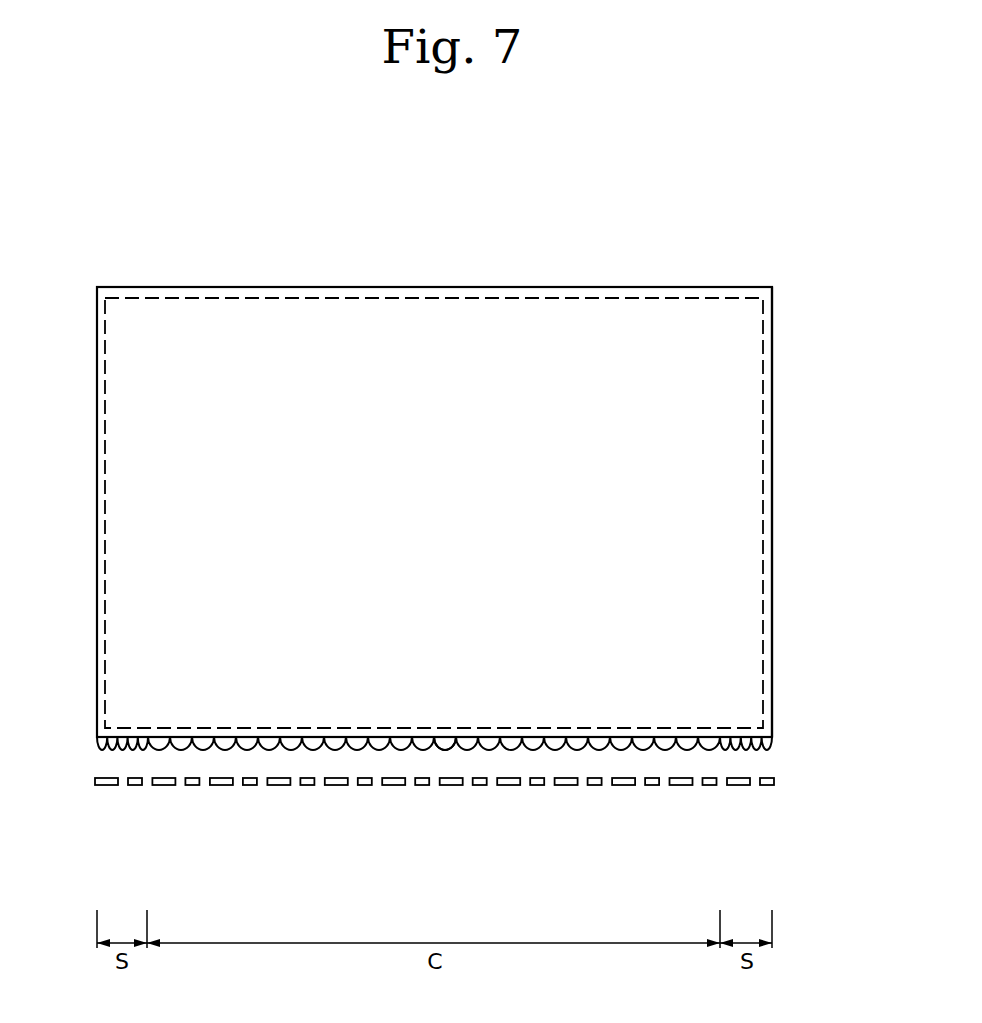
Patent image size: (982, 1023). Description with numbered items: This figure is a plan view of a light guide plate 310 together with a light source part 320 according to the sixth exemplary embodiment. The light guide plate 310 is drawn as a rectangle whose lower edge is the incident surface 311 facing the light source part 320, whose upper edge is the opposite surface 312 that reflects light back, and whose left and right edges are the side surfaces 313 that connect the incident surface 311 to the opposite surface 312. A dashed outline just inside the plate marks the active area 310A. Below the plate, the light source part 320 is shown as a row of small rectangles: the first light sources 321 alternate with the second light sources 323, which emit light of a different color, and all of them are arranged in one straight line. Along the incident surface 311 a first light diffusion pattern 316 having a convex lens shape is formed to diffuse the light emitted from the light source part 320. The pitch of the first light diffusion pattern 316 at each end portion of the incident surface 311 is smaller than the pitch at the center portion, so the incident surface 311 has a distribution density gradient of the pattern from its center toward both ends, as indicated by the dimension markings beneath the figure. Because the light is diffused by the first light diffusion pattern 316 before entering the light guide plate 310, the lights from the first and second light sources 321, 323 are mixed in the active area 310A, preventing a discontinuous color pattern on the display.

The light guide plate 310 is at (710, 288).
The active area 310A is at (598, 297).
The incident surface 311 is at (443, 749).
The opposite surface 312 is at (485, 286).
The side surfaces 313 is at (773, 513).
The first light diffusion pattern 316 is at (773, 740).
The light source part 320 is at (446, 835).
The first light sources 321 is at (738, 786).
The second light sources 323 is at (778, 817).